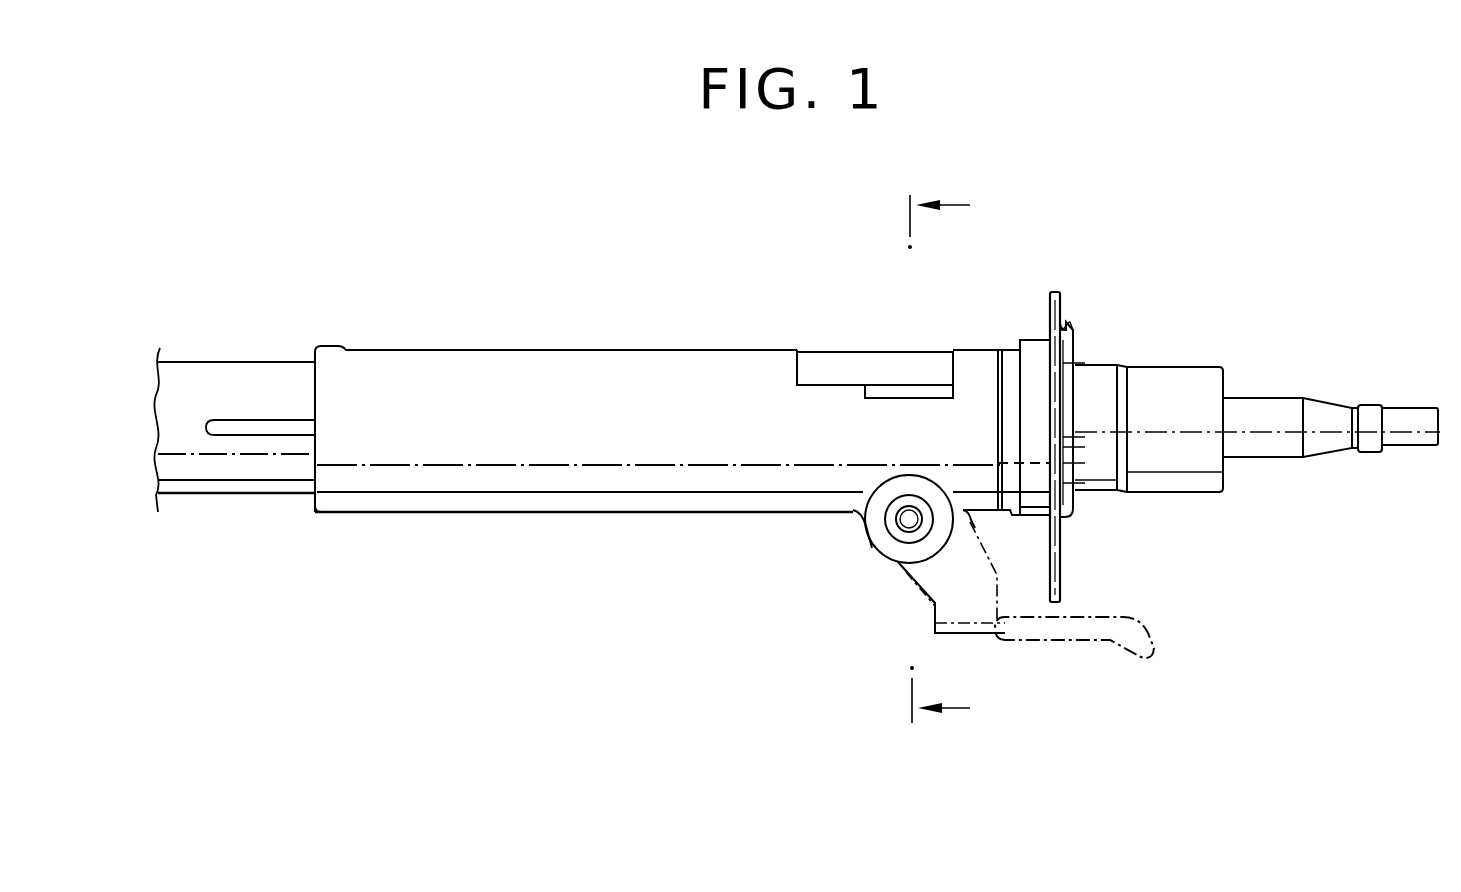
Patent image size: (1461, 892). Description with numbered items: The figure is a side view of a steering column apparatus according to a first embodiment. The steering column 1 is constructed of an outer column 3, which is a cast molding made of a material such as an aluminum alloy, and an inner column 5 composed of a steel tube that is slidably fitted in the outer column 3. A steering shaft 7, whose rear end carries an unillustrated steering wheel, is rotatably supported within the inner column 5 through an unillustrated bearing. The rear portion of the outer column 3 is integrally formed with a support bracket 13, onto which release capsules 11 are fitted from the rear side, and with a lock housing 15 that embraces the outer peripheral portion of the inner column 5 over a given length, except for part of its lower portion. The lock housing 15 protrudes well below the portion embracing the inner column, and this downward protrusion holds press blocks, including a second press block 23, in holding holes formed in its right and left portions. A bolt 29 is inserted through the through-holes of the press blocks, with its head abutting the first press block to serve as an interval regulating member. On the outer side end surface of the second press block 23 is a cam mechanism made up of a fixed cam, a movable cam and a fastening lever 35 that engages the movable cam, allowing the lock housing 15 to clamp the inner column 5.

The steering column 1 is at (603, 292).
The outer column 3 is at (491, 338).
The inner column 5 is at (1155, 388).
The steering shaft 7 is at (1322, 413).
The release capsules 11 is at (970, 355).
The support bracket 13 is at (845, 355).
The lock housing 15 is at (908, 438).
The second press block 23 is at (882, 526).
The bolt 29 is at (905, 525).
The fastening lever 35 is at (1053, 633).